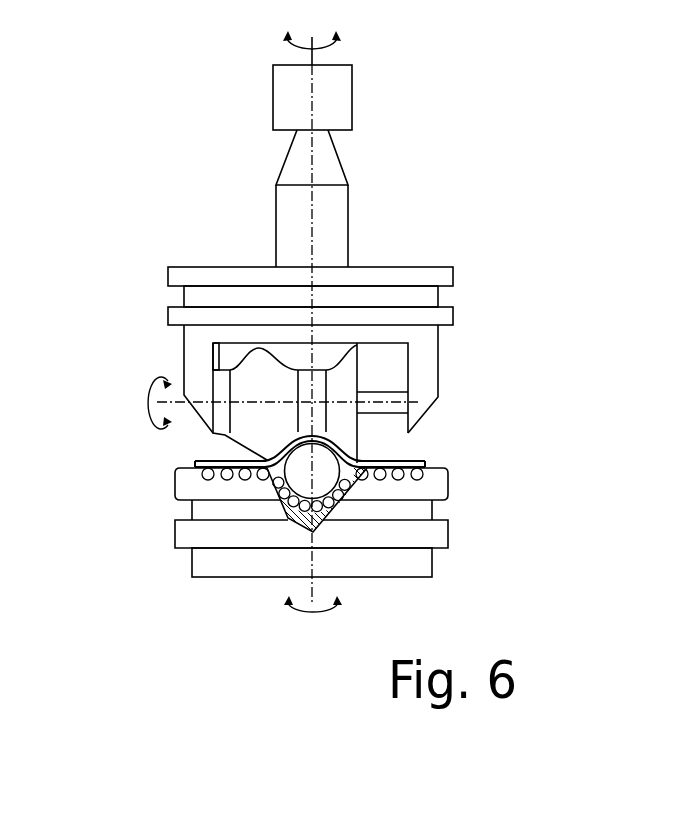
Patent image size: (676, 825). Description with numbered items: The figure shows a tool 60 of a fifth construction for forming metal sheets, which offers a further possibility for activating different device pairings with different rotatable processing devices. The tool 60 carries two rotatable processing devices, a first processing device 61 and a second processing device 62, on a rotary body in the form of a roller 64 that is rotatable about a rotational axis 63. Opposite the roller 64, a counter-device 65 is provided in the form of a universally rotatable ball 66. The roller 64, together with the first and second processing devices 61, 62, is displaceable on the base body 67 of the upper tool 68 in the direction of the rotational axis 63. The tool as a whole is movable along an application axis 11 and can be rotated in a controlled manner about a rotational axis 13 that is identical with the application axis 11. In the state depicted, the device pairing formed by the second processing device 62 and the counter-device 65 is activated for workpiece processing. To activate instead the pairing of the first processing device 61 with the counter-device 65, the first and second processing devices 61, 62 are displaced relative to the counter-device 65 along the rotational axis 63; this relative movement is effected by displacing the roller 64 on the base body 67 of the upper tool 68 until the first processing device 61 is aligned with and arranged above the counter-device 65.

The application axis 11 is at (310, 60).
The rotational axis of the tool 13 is at (310, 588).
The tool 60 is at (362, 102).
The first processing device 61 is at (222, 370).
The second processing device 62 is at (303, 370).
The rotational axis 63 is at (174, 395).
The roller 64 is at (348, 378).
The counter-device 65 is at (333, 453).
The universally rotatable ball 66 is at (323, 483).
The base body 67 is at (397, 255).
The upper tool 68 is at (153, 260).